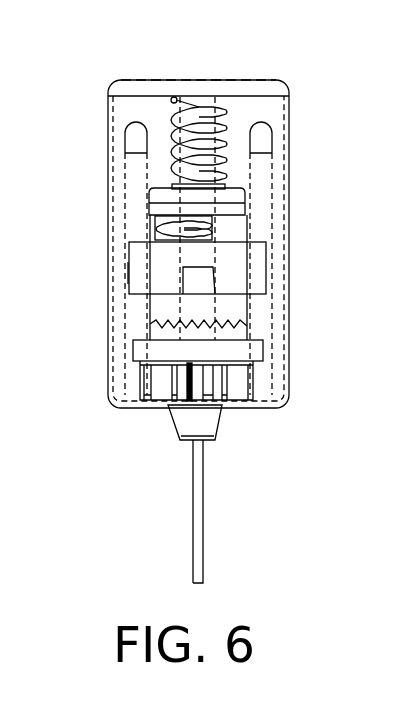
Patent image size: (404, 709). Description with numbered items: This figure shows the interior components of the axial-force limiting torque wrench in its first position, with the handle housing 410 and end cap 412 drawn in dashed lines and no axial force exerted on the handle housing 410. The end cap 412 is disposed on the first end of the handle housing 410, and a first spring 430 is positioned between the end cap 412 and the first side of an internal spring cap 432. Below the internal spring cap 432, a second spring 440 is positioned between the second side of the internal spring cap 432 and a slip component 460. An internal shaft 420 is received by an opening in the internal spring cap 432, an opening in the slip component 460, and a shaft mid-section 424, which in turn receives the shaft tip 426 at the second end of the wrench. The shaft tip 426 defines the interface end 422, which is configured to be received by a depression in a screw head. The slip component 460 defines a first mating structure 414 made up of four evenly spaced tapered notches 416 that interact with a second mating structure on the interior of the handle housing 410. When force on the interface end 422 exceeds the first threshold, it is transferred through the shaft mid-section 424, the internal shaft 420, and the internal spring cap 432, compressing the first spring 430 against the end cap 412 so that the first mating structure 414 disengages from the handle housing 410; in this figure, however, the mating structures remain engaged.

The handle housing 410 is at (287, 178).
The end cap 412 is at (142, 87).
The first mating structure 414 is at (163, 275).
The tapered notches 416 is at (130, 268).
The internal shaft 420 is at (148, 230).
The interface end 422 is at (205, 575).
The shaft mid-section 424 is at (232, 383).
The shaft tip 426 is at (197, 485).
The first spring 430 is at (226, 112).
The internal spring cap 432 is at (235, 208).
The second spring 440 is at (243, 228).
The slip component 460 is at (128, 273).